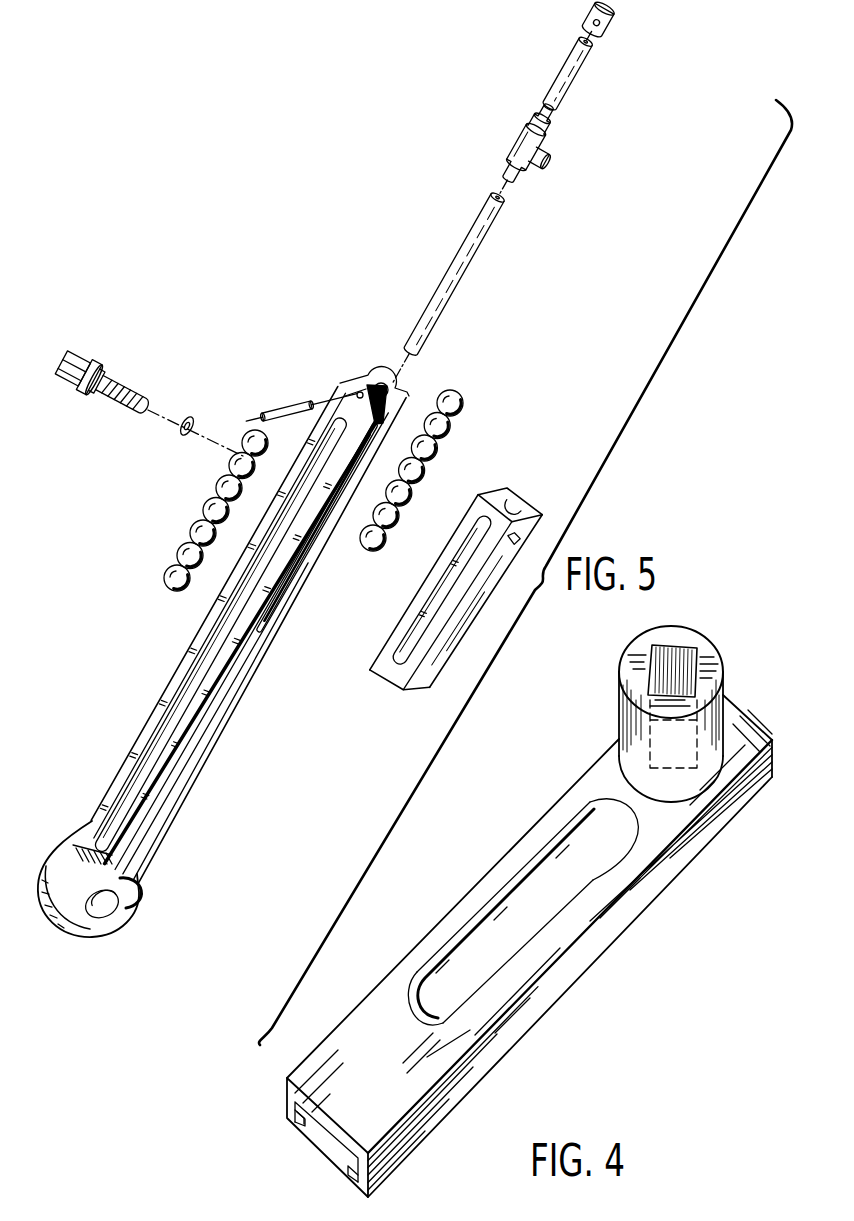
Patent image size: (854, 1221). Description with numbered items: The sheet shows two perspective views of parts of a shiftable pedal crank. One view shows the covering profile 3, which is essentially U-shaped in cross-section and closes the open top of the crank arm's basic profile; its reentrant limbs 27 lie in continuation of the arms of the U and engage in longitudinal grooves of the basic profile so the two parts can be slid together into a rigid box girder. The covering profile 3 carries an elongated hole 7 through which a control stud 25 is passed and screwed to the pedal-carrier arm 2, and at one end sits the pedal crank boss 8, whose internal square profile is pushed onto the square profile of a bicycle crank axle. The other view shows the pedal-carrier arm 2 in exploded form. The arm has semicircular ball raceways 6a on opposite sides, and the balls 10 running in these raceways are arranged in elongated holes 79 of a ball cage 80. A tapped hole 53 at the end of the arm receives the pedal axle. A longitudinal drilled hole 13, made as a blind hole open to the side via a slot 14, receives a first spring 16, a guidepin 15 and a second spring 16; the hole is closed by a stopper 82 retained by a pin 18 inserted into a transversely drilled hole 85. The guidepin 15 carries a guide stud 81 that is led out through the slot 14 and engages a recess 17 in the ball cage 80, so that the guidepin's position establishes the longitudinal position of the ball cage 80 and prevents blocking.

In FIG. 5, the pedal-carrier arm 2 is at (258, 635).
In FIG. 4, the covering profile 3 is at (525, 893).
In FIG. 5, the semicircular ball raceways 6a is at (221, 635).
In FIG. 4, the elongated hole 7 is at (545, 918).
In FIG. 4, the pedal crank boss 8 is at (672, 630).
In FIG. 5, the balls 10 is at (196, 532).
In FIG. 5, the longitudinal drilled hole 13 is at (390, 384).
In FIG. 5, the slot 14 is at (317, 527).
In FIG. 5, the guidepin 15 is at (539, 152).
In FIG. 5, the spring 16 is at (504, 206).
In FIG. 5, the recess 17 is at (513, 538).
In FIG. 5, the pin 18 is at (280, 410).
In FIG. 5, the control stud 25 is at (80, 358).
In FIG. 4, the reentrant limbs 27 is at (356, 1182).
In FIG. 5, the tapped hole 53 is at (115, 898).
In FIG. 5, the elongated holes 79 is at (442, 589).
In FIG. 5, the ball cage 80 is at (454, 608).
In FIG. 5, the guide stud 81 is at (558, 181).
In FIG. 5, the stopper 82 is at (571, 27).
In FIG. 5, the transversely drilled hole 85 is at (360, 392).